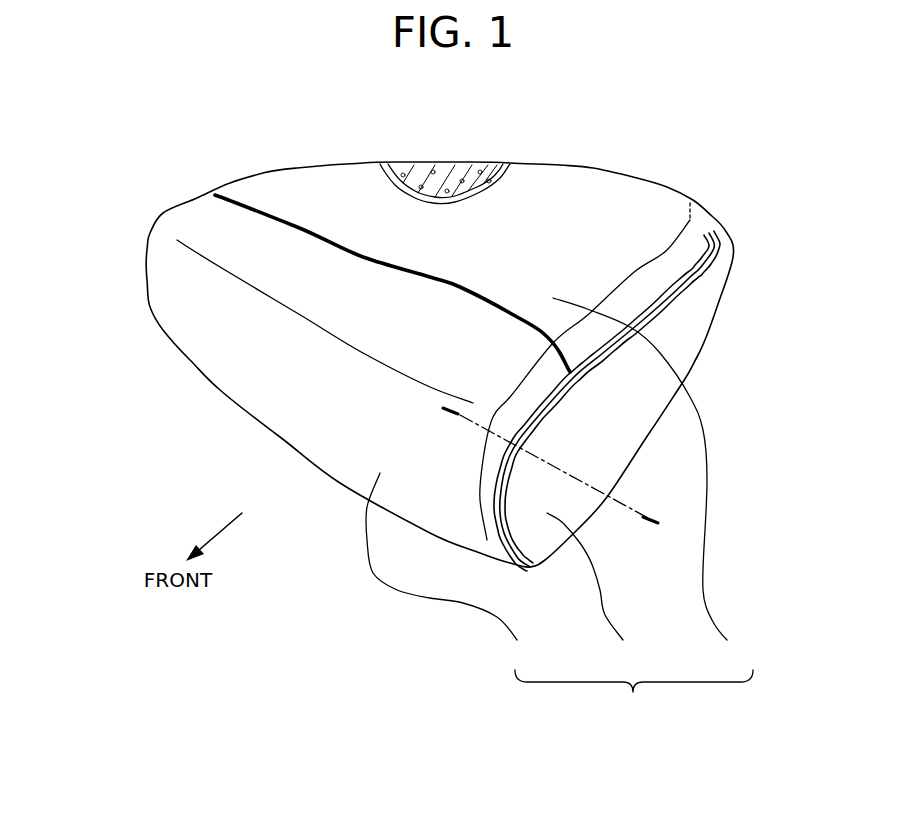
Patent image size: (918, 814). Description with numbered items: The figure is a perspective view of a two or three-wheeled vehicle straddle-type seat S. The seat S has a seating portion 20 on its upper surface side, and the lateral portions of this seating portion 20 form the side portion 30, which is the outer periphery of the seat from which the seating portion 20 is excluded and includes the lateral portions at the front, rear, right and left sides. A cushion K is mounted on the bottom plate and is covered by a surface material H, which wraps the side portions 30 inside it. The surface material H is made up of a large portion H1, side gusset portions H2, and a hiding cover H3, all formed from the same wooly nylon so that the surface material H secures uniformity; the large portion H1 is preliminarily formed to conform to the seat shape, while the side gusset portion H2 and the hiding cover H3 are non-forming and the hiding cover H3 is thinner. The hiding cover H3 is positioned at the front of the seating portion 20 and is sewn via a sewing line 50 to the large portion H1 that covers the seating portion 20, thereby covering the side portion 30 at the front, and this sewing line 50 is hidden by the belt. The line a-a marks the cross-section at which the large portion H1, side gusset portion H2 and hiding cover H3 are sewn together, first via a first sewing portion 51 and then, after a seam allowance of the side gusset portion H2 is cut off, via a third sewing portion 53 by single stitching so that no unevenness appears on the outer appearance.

The two or three-wheeled vehicle straddle-type seat S is at (127, 124).
The seating portion 20 is at (608, 187).
The side portion 30 is at (243, 380).
The sewing line 50 is at (311, 229).
The first sewing portion 51 is at (711, 234).
The third sewing portion 53 is at (700, 284).
The cushion K is at (442, 158).
The large portion H1 is at (490, 158).
The side gusset portion H2 is at (598, 593).
The hiding cover H3 is at (458, 573).
The surface material H is at (634, 694).
The line a- a is at (444, 425).